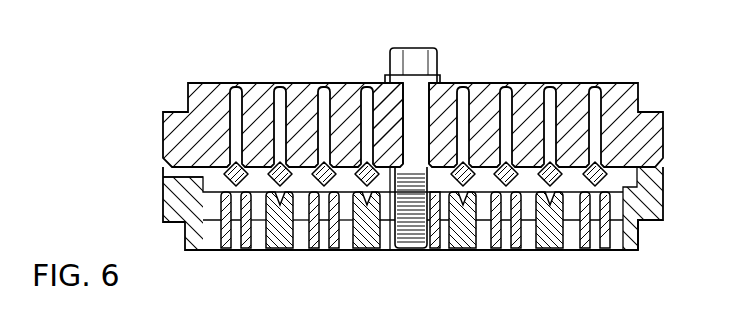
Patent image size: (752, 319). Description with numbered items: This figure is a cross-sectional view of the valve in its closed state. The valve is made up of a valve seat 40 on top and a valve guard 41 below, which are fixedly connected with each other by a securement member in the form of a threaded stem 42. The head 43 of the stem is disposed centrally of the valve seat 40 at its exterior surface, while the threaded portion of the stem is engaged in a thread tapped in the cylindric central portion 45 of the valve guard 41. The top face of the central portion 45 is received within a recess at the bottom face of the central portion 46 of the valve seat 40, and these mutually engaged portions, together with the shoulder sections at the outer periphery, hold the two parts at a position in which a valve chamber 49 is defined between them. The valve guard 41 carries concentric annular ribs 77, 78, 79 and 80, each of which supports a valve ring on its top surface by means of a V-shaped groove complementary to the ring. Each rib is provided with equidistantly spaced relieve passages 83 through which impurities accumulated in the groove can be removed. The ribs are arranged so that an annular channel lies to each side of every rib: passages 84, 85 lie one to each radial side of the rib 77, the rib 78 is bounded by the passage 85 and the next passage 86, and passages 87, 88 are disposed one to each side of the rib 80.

The valve seat 40 is at (643, 135).
The valve guard 41 is at (643, 203).
The threaded stem 42 is at (413, 105).
The head 43 is at (413, 57).
The cylindric central portion 45 is at (437, 251).
The central portion 46 is at (383, 103).
The valve chamber 49 is at (205, 177).
The annular rib 77 is at (610, 251).
The annular rib 78 is at (549, 251).
The annular rib 79 is at (335, 251).
The annular rib 80 is at (372, 251).
The relieve passages 83 is at (509, 280).
The annular passage 84 is at (650, 225).
The annular passage 85 is at (262, 251).
The annular passage 86 is at (302, 251).
The passage 87 is at (341, 200).
The passage 88 is at (390, 250).